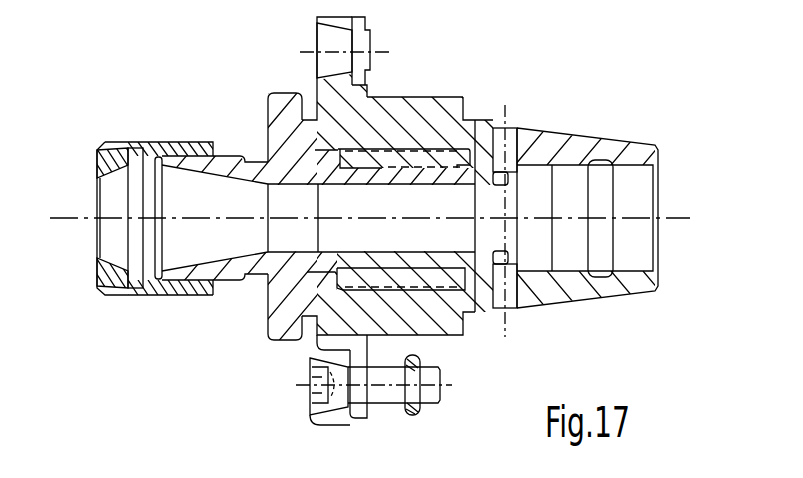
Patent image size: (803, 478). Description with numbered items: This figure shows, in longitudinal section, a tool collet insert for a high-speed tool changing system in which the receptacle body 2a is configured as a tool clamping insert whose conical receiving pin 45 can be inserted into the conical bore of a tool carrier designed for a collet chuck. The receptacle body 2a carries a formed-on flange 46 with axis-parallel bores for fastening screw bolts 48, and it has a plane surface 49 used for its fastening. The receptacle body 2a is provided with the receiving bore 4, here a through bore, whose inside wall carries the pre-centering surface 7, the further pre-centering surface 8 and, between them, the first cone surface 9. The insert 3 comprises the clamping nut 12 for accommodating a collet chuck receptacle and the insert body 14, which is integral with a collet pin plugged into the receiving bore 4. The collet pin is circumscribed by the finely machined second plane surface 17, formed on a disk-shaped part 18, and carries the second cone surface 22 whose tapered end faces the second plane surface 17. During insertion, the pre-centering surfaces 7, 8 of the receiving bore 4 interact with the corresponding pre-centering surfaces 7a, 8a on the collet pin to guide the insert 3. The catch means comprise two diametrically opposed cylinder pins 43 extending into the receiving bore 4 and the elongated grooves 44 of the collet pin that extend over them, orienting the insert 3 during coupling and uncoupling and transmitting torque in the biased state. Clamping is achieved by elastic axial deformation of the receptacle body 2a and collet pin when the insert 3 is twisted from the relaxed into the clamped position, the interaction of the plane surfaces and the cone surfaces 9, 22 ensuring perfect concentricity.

The insert 3 is at (245, 297).
The clamping nut 12 is at (120, 290).
The disk-shaped part 18 is at (276, 98).
The first cone surface 9 is at (437, 97).
The receptacle body 2a is at (467, 97).
The pre-centering surface 7 is at (406, 148).
The pre-centering surface 7a is at (327, 265).
The second cone surface 22 is at (410, 280).
The flange 46 is at (337, 22).
The second plane surface 17 is at (372, 42).
The cylinder pins 43 is at (515, 128).
The pre-centering surface 8 is at (528, 306).
The pre-centering surface 8a is at (482, 180).
The elongated grooves 44 is at (510, 186).
The conical receiving pin 45 is at (560, 148).
The receiving bore 4 is at (638, 207).
The insert body 14 is at (272, 341).
The fastening screw bolts 48 is at (390, 392).
The plane surface 49 is at (350, 350).